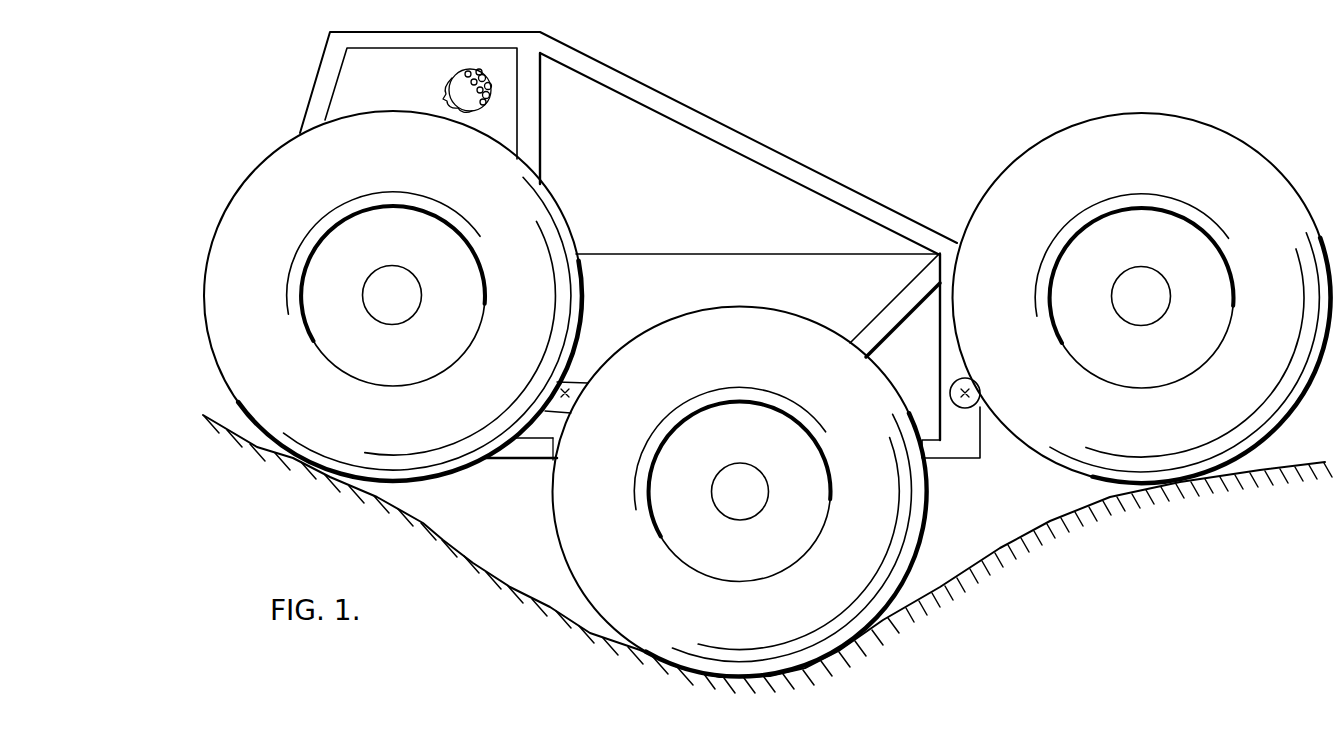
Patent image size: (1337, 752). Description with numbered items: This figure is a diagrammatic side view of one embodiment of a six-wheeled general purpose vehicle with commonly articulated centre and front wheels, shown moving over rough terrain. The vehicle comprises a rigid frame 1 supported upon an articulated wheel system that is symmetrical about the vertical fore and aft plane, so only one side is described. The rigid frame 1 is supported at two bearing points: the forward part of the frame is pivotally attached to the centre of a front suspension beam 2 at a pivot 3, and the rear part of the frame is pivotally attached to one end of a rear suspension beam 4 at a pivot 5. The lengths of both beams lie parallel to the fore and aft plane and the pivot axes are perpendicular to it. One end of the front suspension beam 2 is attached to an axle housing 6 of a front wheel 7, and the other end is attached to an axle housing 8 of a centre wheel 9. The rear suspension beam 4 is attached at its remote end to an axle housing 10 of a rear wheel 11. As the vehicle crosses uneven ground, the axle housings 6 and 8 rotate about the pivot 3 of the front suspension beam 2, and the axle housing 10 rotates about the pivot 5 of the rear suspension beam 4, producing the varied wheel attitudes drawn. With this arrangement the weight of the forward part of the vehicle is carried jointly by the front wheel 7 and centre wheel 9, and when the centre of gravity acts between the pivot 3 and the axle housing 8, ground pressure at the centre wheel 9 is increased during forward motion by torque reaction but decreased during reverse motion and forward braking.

The rigid frame 1 is at (808, 177).
The front suspension beam 2 is at (555, 440).
The pivot 3 is at (517, 440).
The rear suspension beam 4 is at (978, 397).
The pivot 5 is at (965, 403).
The axle housing 6 is at (383, 277).
The front wheel 7 is at (240, 212).
The axle housing 8 is at (720, 488).
The centre wheel 9 is at (573, 562).
The axle housing 10 is at (1152, 283).
The rear wheel 11 is at (1282, 197).